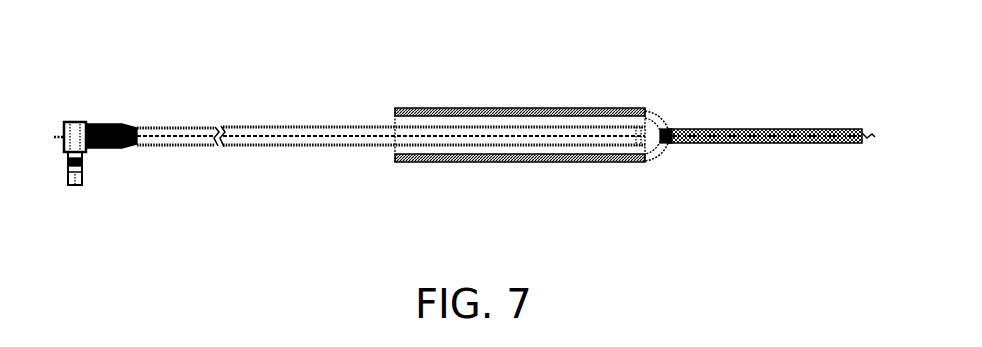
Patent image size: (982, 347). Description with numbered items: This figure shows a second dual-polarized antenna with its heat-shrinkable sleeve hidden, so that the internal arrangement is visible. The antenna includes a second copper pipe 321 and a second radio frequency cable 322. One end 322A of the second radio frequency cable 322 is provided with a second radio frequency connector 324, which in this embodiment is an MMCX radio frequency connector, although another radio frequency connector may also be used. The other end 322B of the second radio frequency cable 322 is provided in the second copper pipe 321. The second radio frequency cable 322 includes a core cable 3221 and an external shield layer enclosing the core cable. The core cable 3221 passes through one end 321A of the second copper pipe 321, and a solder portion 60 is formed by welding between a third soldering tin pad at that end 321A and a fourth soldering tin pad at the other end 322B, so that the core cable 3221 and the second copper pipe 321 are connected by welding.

The second radio frequency connector 324 is at (72, 121).
The one end of the second radio frequency cable 322A is at (116, 122).
The second radio frequency cable 322 is at (288, 150).
The second copper pipe 321 is at (490, 164).
The one end of the second copper pipe 321A is at (662, 118).
The other end of the second radio frequency cable 322B is at (640, 148).
The solder portion 60 is at (671, 142).
The core cable 3221 is at (800, 146).